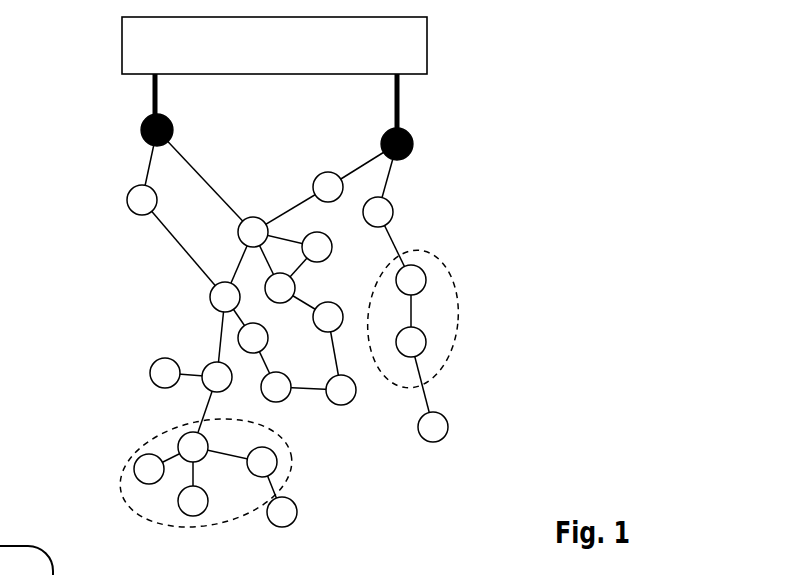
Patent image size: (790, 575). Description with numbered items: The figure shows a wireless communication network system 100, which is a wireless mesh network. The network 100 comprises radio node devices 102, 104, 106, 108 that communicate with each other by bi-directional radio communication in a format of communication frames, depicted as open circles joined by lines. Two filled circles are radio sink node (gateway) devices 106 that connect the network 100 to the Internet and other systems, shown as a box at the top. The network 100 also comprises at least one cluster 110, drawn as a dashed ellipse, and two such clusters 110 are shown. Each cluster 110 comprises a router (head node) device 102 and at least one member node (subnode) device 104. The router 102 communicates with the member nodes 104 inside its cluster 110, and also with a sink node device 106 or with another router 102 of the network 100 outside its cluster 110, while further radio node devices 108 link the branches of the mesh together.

The wireless communication network system 100 is at (71, 344).
The router device 102 is at (422, 268).
The member node device 104 is at (318, 175).
The radio sink node device 106 is at (145, 118).
The radio node device 108 is at (211, 300).
The cluster 110 is at (452, 370).